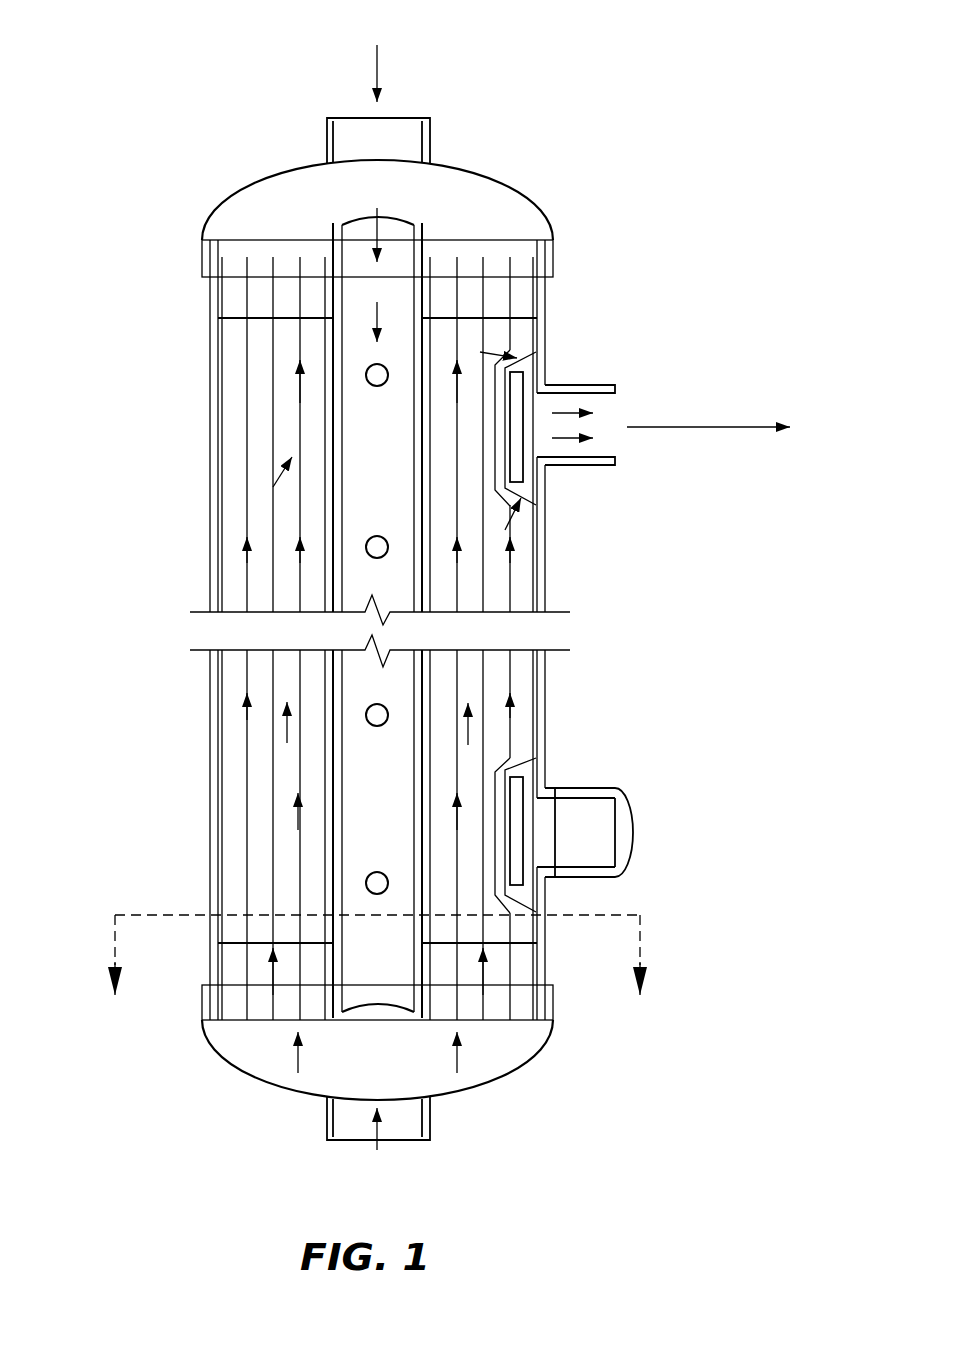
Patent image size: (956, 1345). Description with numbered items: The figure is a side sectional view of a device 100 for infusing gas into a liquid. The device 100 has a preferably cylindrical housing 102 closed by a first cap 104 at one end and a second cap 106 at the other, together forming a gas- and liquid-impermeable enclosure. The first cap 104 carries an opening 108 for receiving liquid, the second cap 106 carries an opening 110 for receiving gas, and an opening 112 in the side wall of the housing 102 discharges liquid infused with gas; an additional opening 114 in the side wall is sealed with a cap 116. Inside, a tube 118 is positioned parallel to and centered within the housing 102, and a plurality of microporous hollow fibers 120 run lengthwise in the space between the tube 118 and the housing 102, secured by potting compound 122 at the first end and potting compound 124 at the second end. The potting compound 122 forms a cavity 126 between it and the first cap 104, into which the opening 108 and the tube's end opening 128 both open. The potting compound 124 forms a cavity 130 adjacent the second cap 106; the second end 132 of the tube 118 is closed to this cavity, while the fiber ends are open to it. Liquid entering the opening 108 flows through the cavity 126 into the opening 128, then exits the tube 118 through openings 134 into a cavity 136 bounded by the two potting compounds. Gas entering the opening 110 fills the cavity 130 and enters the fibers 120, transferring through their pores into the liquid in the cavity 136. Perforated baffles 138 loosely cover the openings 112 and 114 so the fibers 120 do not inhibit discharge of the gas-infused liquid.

The device 100 is at (162, 123).
The housing 102 is at (208, 362).
The first cap 104 is at (257, 187).
The second cap 106 is at (255, 1074).
The opening 108 is at (431, 142).
The opening 110 is at (431, 1122).
The opening 112 is at (607, 468).
The additional opening 114 is at (628, 833).
The cap 116 is at (605, 786).
The tube 118 is at (422, 672).
The microporous hollow fibers 120 is at (510, 592).
The potting compound 122 is at (497, 248).
The potting compound 124 is at (495, 1008).
The cavity 126 is at (312, 219).
The opening 128 is at (398, 215).
The cavity 130 is at (393, 1070).
The second end 132 is at (387, 1008).
The openings 134 is at (420, 458).
The cavity 136 is at (258, 508).
The baffles 138 is at (523, 380).